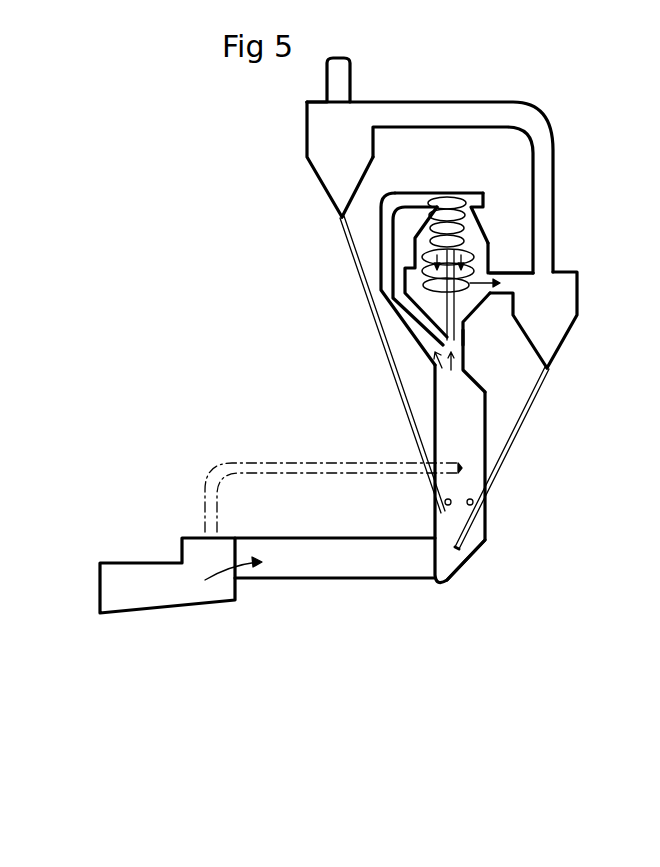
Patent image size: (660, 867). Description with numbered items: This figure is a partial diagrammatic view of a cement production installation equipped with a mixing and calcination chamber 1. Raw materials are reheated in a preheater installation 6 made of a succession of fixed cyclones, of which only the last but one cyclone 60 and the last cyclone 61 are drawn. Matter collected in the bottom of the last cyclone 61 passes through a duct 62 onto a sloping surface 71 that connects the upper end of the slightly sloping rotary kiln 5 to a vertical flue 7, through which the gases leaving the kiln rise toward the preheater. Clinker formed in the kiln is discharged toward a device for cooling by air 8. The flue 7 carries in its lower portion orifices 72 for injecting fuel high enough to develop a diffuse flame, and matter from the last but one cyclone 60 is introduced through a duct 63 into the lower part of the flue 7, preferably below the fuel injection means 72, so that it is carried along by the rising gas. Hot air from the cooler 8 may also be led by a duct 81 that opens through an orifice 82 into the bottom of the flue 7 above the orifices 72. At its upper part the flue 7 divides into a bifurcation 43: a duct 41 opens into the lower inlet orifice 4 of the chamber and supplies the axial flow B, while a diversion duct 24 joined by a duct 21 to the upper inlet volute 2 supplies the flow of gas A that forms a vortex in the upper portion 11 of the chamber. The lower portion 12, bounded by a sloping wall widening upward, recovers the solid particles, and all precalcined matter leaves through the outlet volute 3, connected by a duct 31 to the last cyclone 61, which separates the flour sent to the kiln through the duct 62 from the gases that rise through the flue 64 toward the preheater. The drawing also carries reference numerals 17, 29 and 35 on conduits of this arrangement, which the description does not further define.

The preheater installation 6 is at (597, 52).
The last but one cyclone 60 is at (315, 180).
The last cyclone 61 is at (557, 340).
The duct 62 is at (540, 383).
The duct 63 is at (370, 301).
The flue 64 is at (555, 158).
The inlet volute 2 is at (460, 192).
The duct 21 is at (397, 188).
The mixing chamber 1 is at (415, 240).
The outlet volute 3 is at (445, 283).
The upper portion 11 is at (493, 252).
The duct 31 is at (513, 268).
The diversion duct 24 is at (397, 325).
The bifurcation 43 is at (433, 342).
The pipe 17 is at (393, 375).
The vertical flue 7 is at (437, 407).
The sloping surface 71 is at (467, 563).
The orifices 72 is at (450, 500).
The lower portion 12 is at (478, 318).
The inlet orifice 4 is at (470, 325).
The duct 41 is at (475, 343).
The pipe 29 is at (520, 422).
The duct 81 is at (227, 463).
The orifice 82 is at (455, 462).
The conduit 35 is at (263, 474).
The device for cooling by air 8 is at (181, 575).
The rotary kiln 5 is at (307, 579).
The flow of gas A is at (432, 195).
The second flow of gas B is at (130, 563).